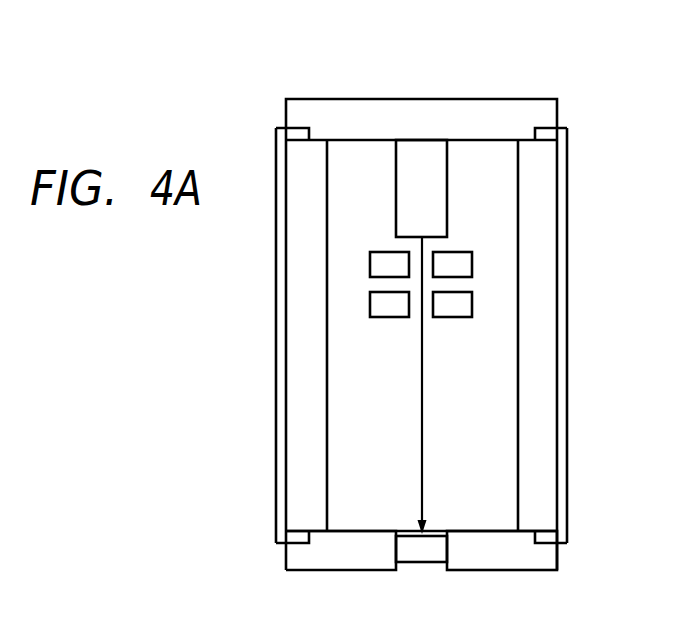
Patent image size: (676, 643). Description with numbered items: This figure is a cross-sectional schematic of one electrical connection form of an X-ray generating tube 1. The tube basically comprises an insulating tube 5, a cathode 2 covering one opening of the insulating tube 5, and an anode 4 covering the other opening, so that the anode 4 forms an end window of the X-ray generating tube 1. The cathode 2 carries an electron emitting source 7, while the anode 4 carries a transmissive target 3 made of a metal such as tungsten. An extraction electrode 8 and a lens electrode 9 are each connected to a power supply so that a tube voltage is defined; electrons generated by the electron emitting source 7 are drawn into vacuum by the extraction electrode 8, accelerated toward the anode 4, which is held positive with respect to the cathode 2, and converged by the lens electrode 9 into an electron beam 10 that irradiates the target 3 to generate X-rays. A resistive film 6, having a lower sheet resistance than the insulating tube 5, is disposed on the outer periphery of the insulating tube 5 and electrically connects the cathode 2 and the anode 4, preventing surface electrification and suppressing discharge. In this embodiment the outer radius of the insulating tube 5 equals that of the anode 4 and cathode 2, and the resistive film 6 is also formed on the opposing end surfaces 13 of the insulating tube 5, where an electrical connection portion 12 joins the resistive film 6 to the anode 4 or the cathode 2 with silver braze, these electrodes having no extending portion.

The X-ray generating tube 1 is at (481, 75).
The cathode 2 is at (412, 115).
The transmissive target 3 is at (417, 553).
The anode 4 is at (487, 557).
The insulating tube 5 is at (297, 292).
The resistive film 6 is at (280, 355).
The electron emitting source 7 is at (437, 218).
The extraction electrode 8 is at (464, 263).
The lens electrode 9 is at (464, 300).
The electron beam 10 is at (422, 419).
The electrical connection portion 12 is at (545, 125).
The end surface 13 is at (317, 137).